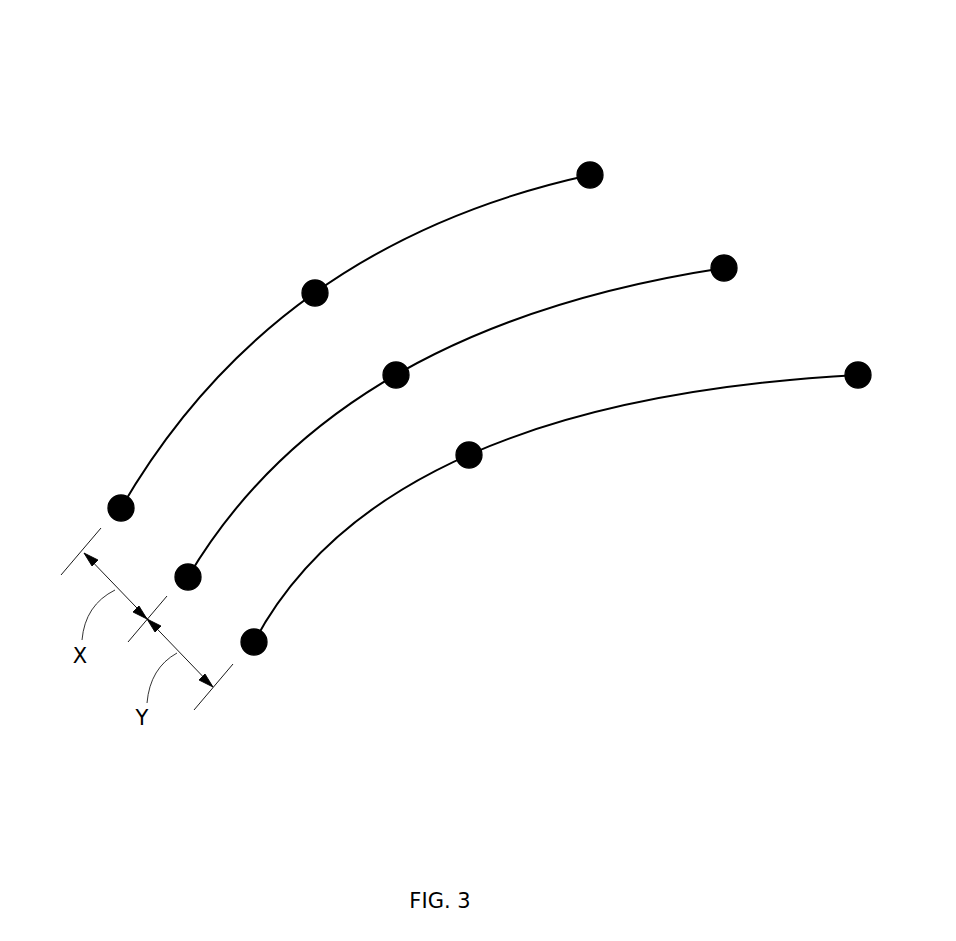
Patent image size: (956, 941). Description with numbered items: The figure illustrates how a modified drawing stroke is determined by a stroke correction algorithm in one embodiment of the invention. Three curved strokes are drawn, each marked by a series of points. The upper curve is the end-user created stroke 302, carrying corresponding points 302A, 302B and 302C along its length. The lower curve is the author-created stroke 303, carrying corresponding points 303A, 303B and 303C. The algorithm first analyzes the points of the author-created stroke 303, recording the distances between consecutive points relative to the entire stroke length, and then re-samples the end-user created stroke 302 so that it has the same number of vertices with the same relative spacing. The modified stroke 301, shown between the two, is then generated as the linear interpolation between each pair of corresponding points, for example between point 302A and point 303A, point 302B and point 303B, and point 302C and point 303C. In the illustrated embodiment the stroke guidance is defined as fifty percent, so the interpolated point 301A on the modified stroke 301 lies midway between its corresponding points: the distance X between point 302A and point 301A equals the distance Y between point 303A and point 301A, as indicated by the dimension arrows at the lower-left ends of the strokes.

The modified stroke 301 is at (668, 273).
The point on modified stroke 301A is at (185, 560).
The end-user created stroke 302 is at (437, 225).
The point on end-user created stroke 302A is at (105, 503).
The point on end-user created stroke 302B is at (302, 287).
The point on end-user created stroke 302C is at (578, 163).
The author-created stroke 303 is at (643, 400).
The point on author-created stroke 303A is at (267, 653).
The point on author-created stroke 303B is at (483, 463).
The point on author-created stroke 303C is at (858, 390).